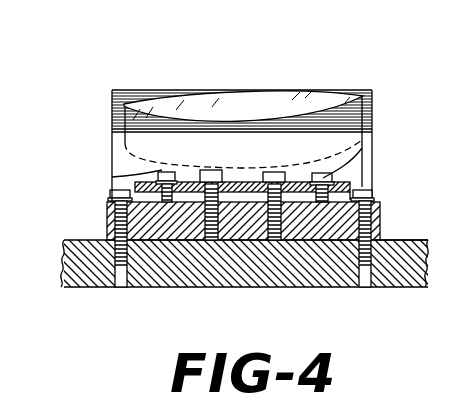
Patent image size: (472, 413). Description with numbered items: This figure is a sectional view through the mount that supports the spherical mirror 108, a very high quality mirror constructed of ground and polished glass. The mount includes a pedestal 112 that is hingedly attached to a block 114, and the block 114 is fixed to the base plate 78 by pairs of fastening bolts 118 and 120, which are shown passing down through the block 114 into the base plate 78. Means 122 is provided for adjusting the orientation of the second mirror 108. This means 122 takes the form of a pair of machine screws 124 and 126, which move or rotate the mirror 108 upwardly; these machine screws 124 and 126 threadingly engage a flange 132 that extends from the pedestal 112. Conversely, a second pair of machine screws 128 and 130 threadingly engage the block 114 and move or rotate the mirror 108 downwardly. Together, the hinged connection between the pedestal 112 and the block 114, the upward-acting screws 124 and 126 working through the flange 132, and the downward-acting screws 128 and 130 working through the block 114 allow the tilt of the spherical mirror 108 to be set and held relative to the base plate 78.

The base plate 78 is at (412, 287).
The spherical mirror 108 is at (293, 89).
The pedestal 112 is at (374, 166).
The block 114 is at (107, 212).
The fastening bolts 118 is at (127, 252).
The fastening bolts 120 is at (377, 250).
The means for adjusting the orientation 122 is at (132, 163).
The machine screw 124 is at (112, 178).
The machine screw 126 is at (365, 160).
The machine screw 128 is at (206, 212).
The machine screw 130 is at (272, 212).
The flange 132 is at (362, 182).